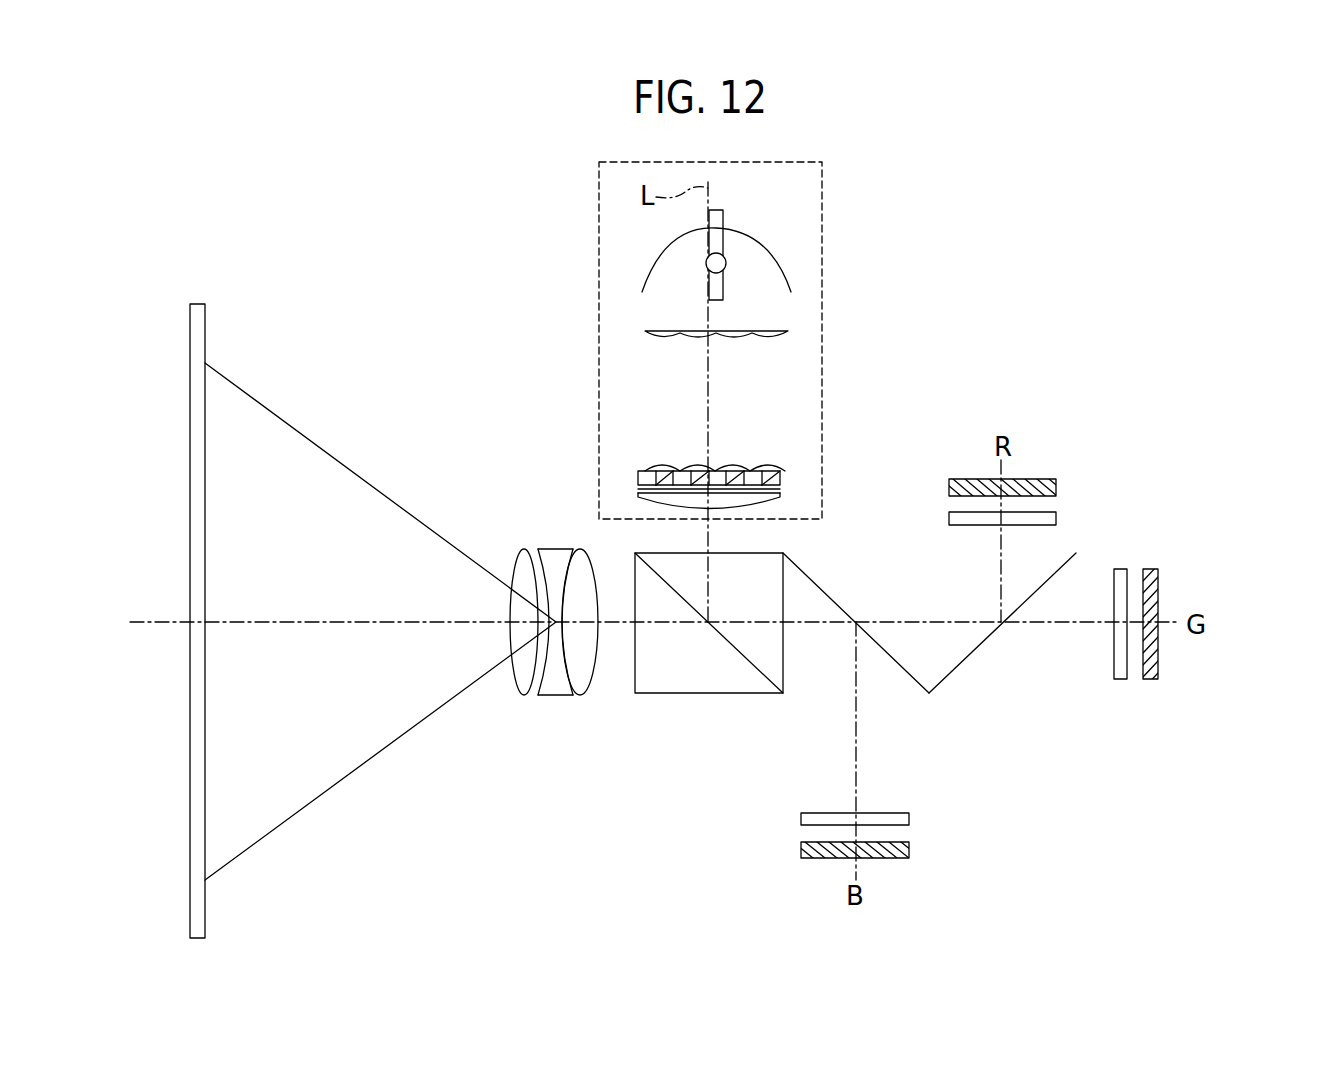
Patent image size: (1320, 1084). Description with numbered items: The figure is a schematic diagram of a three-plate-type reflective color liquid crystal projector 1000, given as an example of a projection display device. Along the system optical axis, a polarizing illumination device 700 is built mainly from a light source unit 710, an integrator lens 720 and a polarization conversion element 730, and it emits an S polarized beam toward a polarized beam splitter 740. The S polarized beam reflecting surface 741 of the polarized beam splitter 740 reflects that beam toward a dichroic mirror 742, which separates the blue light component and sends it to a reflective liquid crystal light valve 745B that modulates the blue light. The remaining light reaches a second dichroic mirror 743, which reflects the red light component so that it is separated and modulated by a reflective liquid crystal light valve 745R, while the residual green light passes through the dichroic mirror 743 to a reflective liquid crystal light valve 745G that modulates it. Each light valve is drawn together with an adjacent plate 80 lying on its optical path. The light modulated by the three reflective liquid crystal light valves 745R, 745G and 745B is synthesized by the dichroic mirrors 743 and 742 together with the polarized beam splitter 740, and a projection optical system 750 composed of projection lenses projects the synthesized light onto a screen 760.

The liquid crystal projector 1000 is at (1062, 251).
The polarizing illumination device 700 is at (822, 187).
The light source unit 710 is at (785, 268).
The integrator lens 720 is at (788, 334).
The polarization conversion element 730 is at (780, 470).
The polarized beam splitter 740 is at (675, 680).
The S polarized beam reflecting surface 741 is at (750, 672).
The dichroic mirror 742 is at (911, 680).
The dichroic mirror 743 is at (962, 663).
The reflective liquid crystal light valve 745R is at (1033, 478).
The reflective liquid crystal light valve 745G is at (1152, 590).
The reflective liquid crystal light valve 745B is at (893, 857).
The optical compensation plate 80 is at (1056, 518).
The projection optical system 750 is at (598, 545).
The screen 760 is at (205, 905).